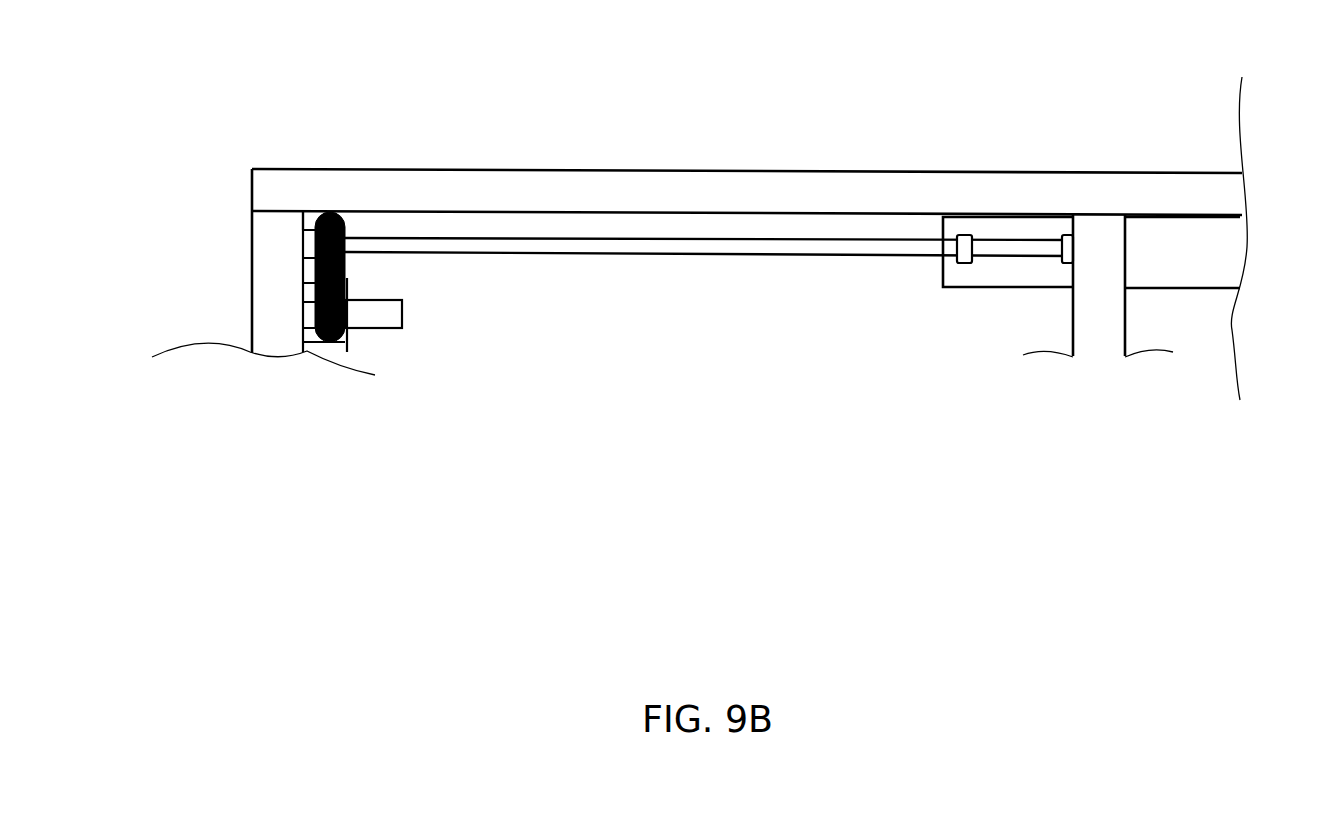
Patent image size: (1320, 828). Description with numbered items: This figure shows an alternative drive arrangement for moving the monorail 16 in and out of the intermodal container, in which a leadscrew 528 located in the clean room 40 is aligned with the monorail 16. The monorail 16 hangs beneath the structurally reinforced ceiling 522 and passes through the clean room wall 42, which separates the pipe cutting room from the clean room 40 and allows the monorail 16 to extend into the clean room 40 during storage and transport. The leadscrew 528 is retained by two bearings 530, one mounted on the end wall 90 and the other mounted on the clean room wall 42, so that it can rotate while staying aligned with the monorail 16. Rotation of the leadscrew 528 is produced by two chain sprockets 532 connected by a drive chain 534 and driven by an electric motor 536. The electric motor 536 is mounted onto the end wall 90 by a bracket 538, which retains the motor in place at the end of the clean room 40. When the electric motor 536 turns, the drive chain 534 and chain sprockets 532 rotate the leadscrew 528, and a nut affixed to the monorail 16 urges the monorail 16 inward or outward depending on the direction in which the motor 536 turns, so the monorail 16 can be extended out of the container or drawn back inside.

The monorail 16 is at (963, 233).
The clean room 40 is at (698, 353).
The clean room wall 42 is at (1125, 333).
The end wall 90 is at (250, 318).
The structurally reinforced ceiling 522 is at (688, 168).
The leadscrew 528 is at (555, 237).
The bearings 530 is at (303, 228).
The chain sprockets 532 is at (322, 213).
The drive chain 534 is at (302, 257).
The electric motor 536 is at (402, 312).
The bracket 538 is at (320, 340).